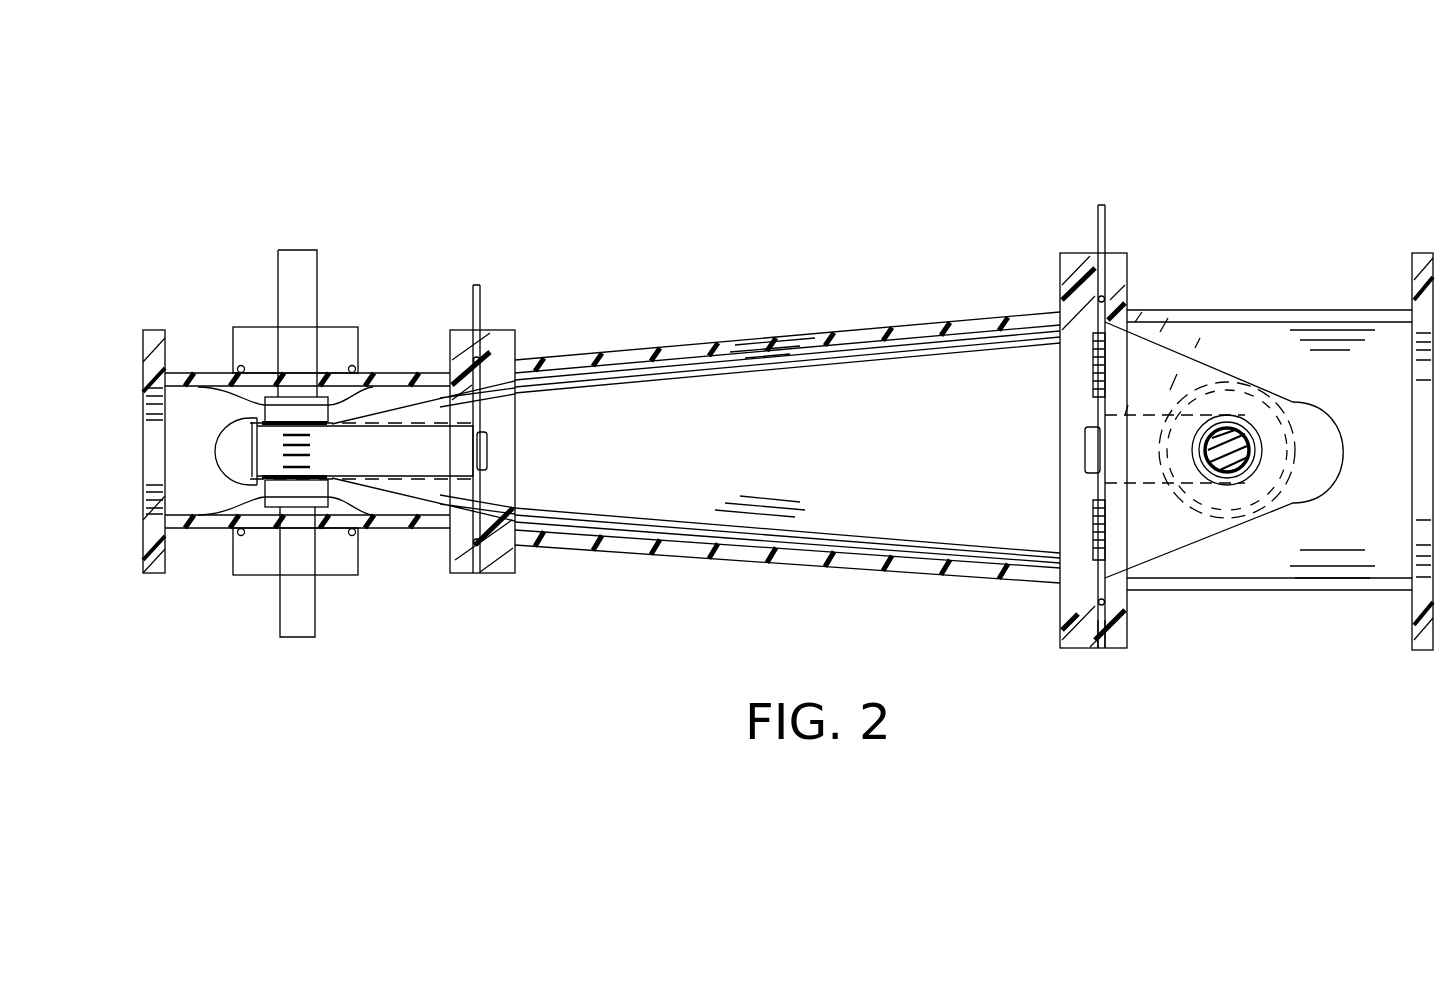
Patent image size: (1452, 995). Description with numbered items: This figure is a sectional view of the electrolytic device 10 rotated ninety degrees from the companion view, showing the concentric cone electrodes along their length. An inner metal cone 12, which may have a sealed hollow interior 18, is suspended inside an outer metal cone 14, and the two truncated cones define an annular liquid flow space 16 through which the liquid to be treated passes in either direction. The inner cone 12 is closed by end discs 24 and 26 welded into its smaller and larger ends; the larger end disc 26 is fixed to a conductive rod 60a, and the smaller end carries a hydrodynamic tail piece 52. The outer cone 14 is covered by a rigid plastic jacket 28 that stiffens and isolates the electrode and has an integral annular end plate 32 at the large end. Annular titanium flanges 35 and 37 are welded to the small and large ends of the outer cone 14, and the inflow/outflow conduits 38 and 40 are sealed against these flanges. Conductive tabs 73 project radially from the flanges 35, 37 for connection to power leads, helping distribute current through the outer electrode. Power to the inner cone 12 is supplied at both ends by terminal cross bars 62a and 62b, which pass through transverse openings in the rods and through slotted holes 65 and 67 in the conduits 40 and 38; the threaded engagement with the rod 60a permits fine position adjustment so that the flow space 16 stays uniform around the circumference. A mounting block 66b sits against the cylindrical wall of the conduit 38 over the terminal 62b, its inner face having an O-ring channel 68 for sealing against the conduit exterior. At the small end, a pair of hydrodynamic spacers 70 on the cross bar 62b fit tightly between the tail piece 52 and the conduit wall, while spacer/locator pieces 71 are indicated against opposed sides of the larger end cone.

The electrolytic device 10 is at (1038, 110).
The inner metal cone 12 is at (657, 522).
The outer metal cone 14 is at (657, 378).
The annular liquid flow space 16 is at (900, 556).
The hollow interior 18 is at (958, 444).
The closing end disc 24 is at (483, 481).
The closing end disc 26 is at (1090, 507).
The jacket 28 is at (878, 322).
The annular end plate 32 is at (1073, 255).
The annular titanium flange 35 is at (472, 575).
The annular titanium flange 37 is at (1100, 650).
The inflow/outflow conduit 38 is at (207, 586).
The inflow/outflow conduit 40 is at (1263, 212).
The tail piece 52 is at (408, 482).
The conductive rod 60a is at (1127, 415).
The electrode terminal 62a is at (1238, 468).
The electrode terminal 62b is at (295, 250).
The slotted hole 65 is at (1193, 475).
The mounting block 66b is at (333, 327).
The slotted hole 67 is at (237, 497).
The O-ring channel 68 is at (352, 375).
The spacer 70 is at (260, 405).
The spacer/locator piece 71 is at (1262, 515).
The conductive tab 73 is at (475, 285).